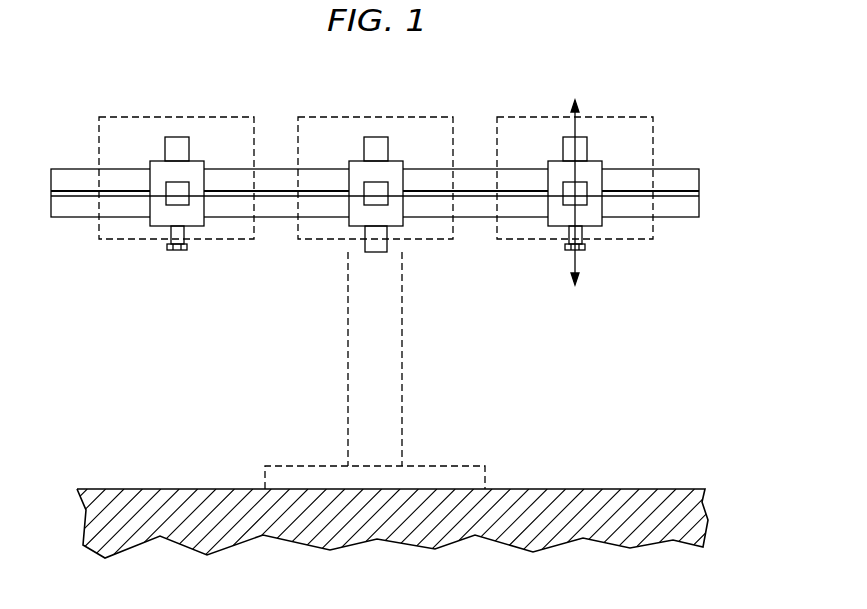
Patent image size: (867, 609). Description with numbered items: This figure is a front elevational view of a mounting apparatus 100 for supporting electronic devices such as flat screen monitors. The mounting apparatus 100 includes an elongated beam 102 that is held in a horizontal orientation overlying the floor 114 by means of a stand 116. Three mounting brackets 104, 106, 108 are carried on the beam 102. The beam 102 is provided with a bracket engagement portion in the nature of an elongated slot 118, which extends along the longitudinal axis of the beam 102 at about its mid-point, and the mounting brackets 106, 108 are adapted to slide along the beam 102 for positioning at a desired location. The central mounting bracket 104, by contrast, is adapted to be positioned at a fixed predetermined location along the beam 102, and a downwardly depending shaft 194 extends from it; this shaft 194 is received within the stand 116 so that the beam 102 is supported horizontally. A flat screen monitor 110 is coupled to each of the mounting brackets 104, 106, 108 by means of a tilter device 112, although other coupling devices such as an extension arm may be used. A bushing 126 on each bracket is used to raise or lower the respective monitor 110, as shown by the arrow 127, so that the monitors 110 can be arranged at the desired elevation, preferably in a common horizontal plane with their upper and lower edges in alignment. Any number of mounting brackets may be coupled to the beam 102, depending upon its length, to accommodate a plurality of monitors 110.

The mounting apparatus 100 is at (546, 46).
The elongated beam 102 is at (687, 218).
The mounting bracket 104 is at (358, 213).
The mounting bracket 106 is at (160, 213).
The mounting bracket 108 is at (558, 213).
The flat screen monitor 110 is at (211, 115).
The tilter device 112 is at (165, 148).
The floor 114 is at (667, 489).
The stand 116 is at (402, 377).
The elongated slot 118 is at (82, 191).
The bushing 126 is at (187, 232).
The arrow 127 is at (577, 258).
The shaft 194 is at (385, 233).